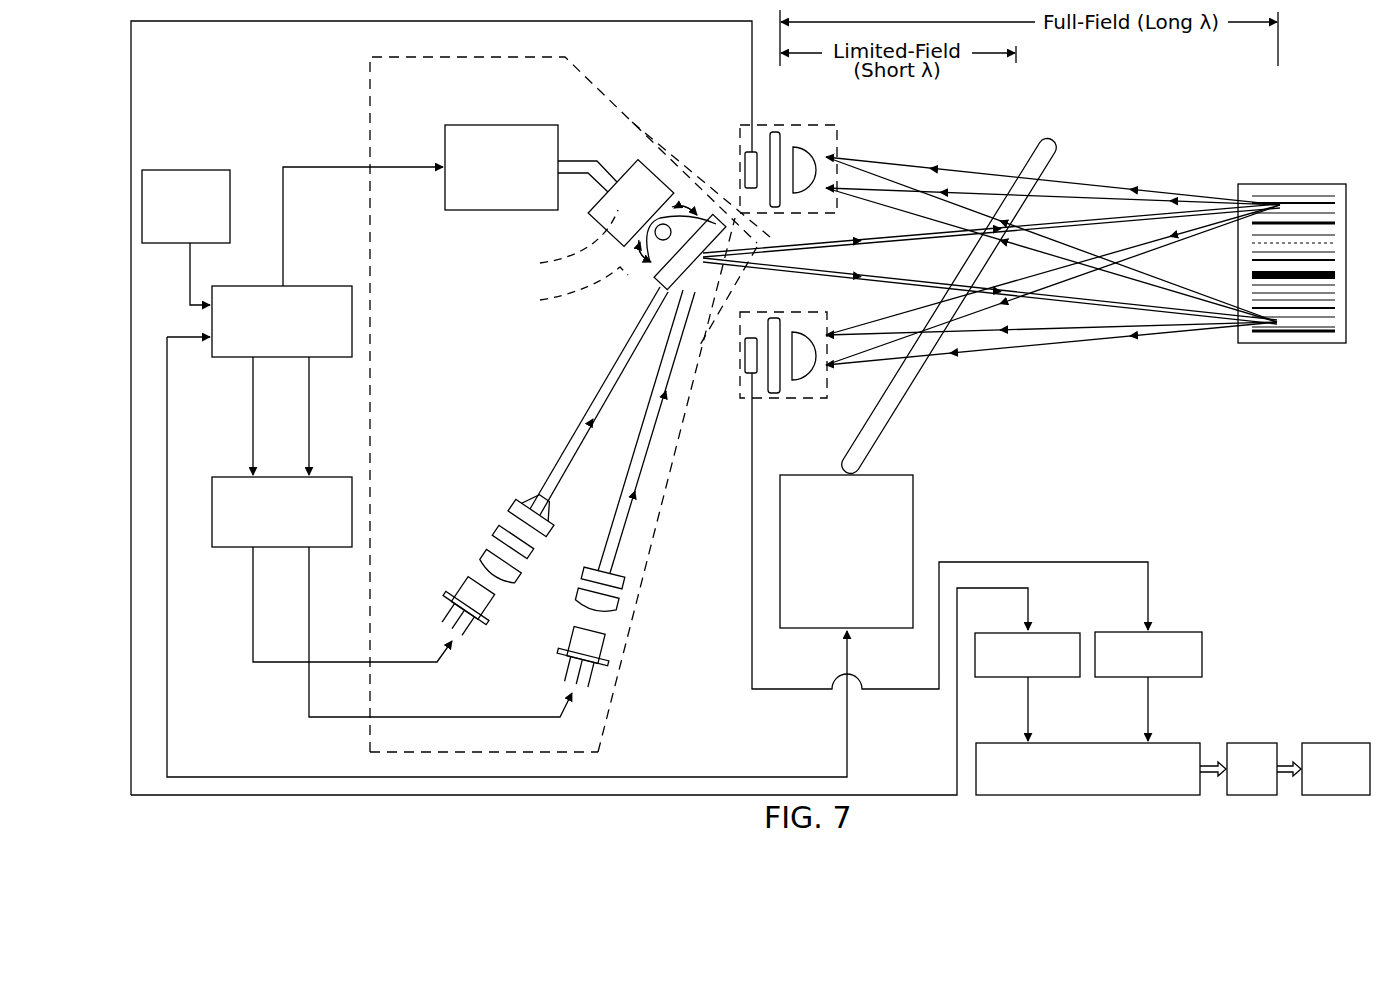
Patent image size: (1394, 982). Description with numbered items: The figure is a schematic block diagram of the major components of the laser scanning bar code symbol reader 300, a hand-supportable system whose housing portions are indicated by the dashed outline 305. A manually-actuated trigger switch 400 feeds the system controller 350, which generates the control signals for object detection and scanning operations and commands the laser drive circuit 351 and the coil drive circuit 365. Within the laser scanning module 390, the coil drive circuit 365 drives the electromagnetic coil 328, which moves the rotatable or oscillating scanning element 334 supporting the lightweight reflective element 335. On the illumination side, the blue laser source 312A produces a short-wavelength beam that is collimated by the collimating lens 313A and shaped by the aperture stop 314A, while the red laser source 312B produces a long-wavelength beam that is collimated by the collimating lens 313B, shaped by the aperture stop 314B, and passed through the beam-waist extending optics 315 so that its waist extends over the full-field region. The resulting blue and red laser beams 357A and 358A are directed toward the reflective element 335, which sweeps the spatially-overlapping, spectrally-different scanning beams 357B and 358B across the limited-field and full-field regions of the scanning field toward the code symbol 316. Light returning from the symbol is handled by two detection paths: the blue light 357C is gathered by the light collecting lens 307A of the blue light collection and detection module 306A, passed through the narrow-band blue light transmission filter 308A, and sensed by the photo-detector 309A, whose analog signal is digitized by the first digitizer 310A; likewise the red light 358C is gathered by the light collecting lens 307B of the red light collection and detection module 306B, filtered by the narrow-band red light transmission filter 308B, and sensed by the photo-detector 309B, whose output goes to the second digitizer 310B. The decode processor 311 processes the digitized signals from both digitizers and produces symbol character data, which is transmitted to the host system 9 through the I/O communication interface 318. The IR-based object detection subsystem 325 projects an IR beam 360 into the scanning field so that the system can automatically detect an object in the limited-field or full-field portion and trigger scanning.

The laser scanning bar code symbol reader 300 is at (1285, 541).
The scanner housing 305 is at (607, 717).
The blue light collection and detection module 306A is at (787, 398).
The red light collection and detection module 306B is at (740, 130).
The light collecting lens 307A is at (805, 330).
The light collecting lens 307B is at (806, 143).
The narrow-band blue light transmission filter 308A is at (775, 396).
The narrow-band red light transmission filter 308B is at (775, 130).
The photo-detector 309A is at (745, 375).
The photo-detector 309B is at (742, 160).
The first digitizer 310A is at (1186, 632).
The second digitizer 310B is at (1066, 632).
The decode processor 311 is at (1186, 743).
The blue laser source 312A is at (602, 645).
The red laser source 312B is at (465, 590).
The collimating lens 313A is at (618, 610).
The collimating lens 313B is at (482, 560).
The aperture stop 314A is at (628, 587).
The aperture stop 314B is at (497, 535).
The beam-waist extending optics 315 is at (515, 510).
The code symbol 316 is at (1292, 345).
The I/O communication interface 318 is at (1253, 743).
The IR-based object detection subsystem 325 is at (914, 521).
The electromagnetic coil 328 is at (585, 226).
The scanning element 334 is at (658, 293).
The reflective element 335 is at (650, 268).
The system controller 350 is at (335, 285).
The laser drive circuit 351 is at (334, 477).
The blue laser beam 357A is at (620, 533).
The laser scanning beam 357B is at (1110, 305).
The blue light 357C is at (1070, 345).
The red laser beam 358A is at (570, 452).
The laser scanning beam 358B is at (1145, 218).
The red light 358C is at (1112, 187).
The IR beam 360 is at (905, 397).
The coil drive circuit 365 is at (500, 124).
The laser scanning module 390 is at (610, 268).
The trigger switch 400 is at (187, 168).
The host system 9 is at (1336, 743).